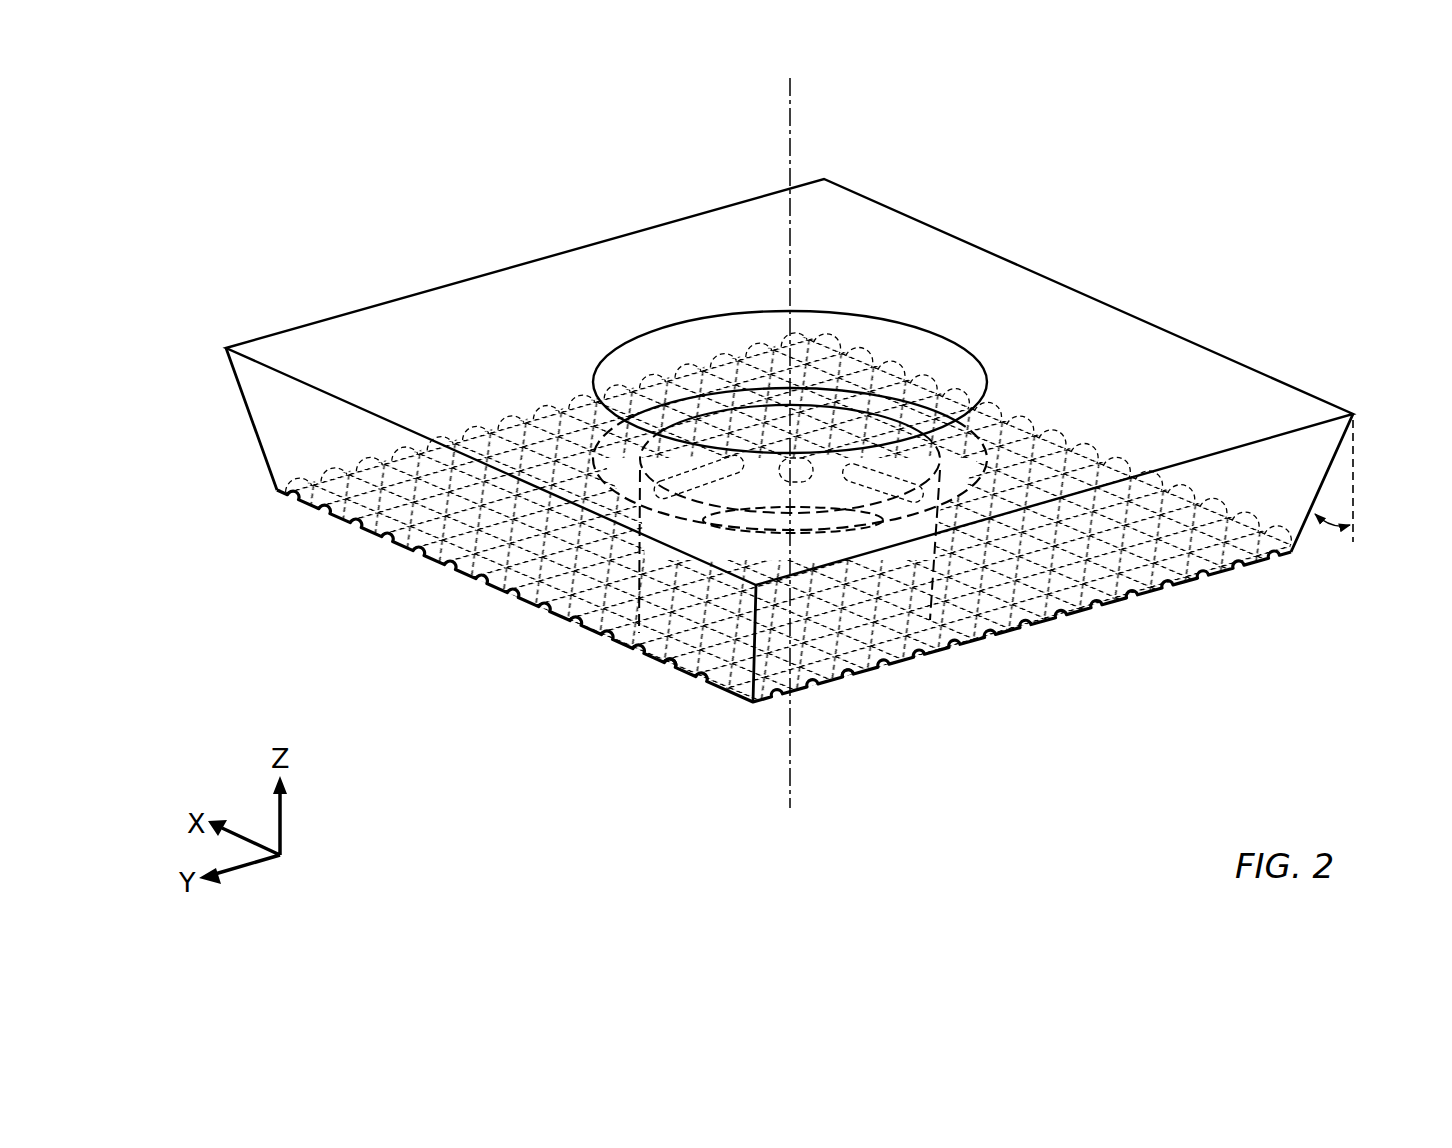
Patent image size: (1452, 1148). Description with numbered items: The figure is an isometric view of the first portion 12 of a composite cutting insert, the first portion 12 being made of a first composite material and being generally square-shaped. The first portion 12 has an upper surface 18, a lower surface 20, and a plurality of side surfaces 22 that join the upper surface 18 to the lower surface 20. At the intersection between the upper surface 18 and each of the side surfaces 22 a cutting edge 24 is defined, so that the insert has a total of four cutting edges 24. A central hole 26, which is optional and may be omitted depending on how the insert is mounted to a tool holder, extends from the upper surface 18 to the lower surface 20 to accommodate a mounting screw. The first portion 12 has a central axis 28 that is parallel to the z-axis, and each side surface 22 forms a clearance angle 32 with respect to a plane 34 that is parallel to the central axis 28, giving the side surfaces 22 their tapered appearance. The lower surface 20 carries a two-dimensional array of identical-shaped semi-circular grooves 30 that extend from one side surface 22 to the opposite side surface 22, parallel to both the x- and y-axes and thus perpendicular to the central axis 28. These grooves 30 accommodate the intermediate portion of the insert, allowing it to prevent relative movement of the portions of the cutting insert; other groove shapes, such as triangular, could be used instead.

The first portion 12 is at (1187, 280).
The upper surface 18 is at (1067, 309).
The lower surface 20 is at (985, 643).
The side surfaces 22 is at (486, 516).
The cutting edge 24 is at (441, 285).
The central hole 26 is at (858, 337).
The central axis 28 is at (792, 118).
The semi-circular grooves 30 is at (675, 664).
The clearance angle 32 is at (1332, 527).
The plane 34 is at (1354, 453).